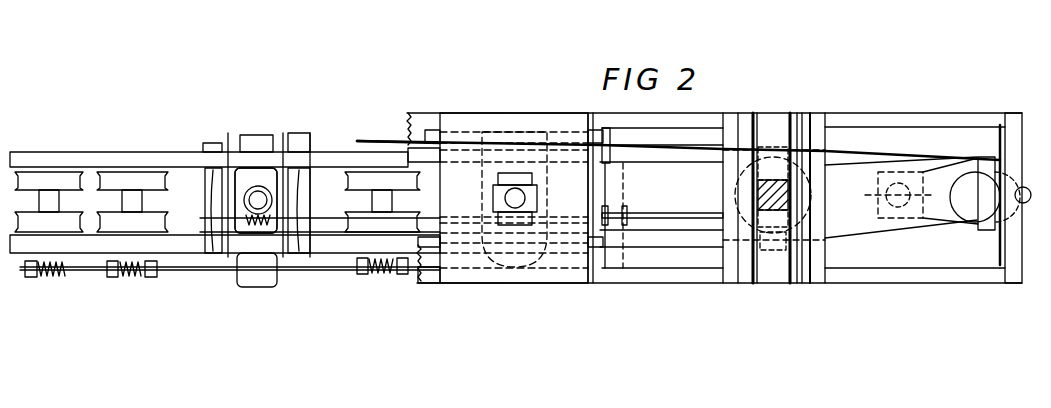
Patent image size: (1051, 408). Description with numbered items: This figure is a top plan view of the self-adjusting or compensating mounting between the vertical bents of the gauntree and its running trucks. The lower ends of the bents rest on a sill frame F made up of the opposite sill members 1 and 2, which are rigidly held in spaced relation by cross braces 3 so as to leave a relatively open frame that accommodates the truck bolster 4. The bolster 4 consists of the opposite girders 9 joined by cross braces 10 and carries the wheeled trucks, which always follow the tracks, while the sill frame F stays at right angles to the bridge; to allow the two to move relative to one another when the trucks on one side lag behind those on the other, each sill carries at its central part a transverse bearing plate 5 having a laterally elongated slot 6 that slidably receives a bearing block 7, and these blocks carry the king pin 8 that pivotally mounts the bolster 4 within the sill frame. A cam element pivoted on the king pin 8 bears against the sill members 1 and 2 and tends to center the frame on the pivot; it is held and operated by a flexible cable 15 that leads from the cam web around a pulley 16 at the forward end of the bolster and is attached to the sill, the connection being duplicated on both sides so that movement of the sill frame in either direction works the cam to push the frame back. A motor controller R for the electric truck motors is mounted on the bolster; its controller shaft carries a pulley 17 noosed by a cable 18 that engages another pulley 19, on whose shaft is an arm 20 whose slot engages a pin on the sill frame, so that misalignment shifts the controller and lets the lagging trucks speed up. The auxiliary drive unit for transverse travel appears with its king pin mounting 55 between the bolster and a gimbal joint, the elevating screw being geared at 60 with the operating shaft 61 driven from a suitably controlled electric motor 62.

The sill member 1 is at (835, 120).
The sill member 2 is at (700, 277).
The cross brace 3 is at (775, 275).
The truck bolster 4 is at (880, 230).
The transverse bearing plate 5 is at (563, 280).
The laterally elongated slot 6 is at (520, 173).
The bearing block 7 is at (493, 200).
The king pin 8 is at (520, 205).
The girder 9 is at (693, 157).
The cross brace 10 is at (620, 183).
The flexible cable 15 is at (931, 152).
The pulley 16 is at (994, 156).
The pulley 17 is at (917, 195).
The cable 18 is at (937, 217).
The pulley 19 is at (968, 207).
The arm 20 is at (1013, 225).
The king pin mounting 55 is at (258, 200).
The gearing 60 is at (263, 218).
The operating shaft 61 is at (314, 220).
The electric motor 62 is at (413, 208).
The motor controller R is at (890, 199).
The sill frame F is at (878, 278).